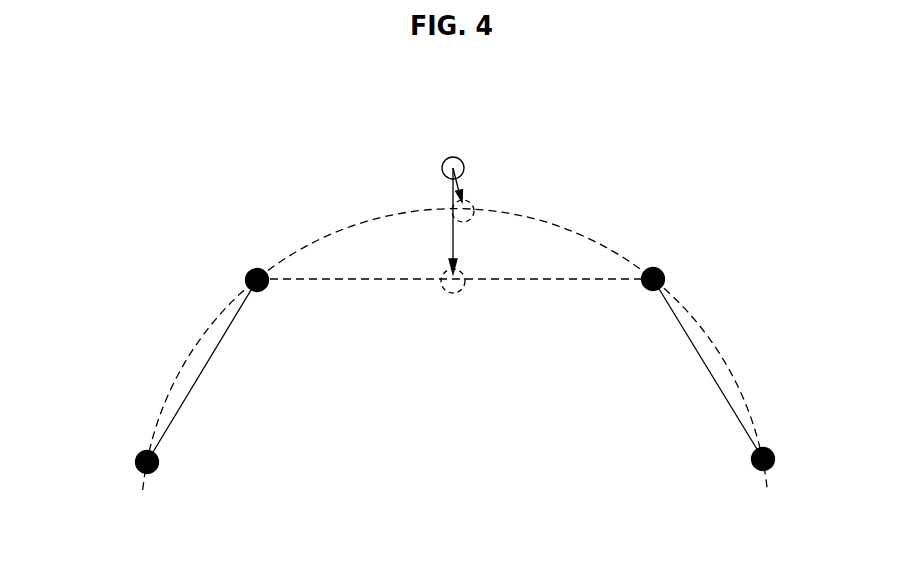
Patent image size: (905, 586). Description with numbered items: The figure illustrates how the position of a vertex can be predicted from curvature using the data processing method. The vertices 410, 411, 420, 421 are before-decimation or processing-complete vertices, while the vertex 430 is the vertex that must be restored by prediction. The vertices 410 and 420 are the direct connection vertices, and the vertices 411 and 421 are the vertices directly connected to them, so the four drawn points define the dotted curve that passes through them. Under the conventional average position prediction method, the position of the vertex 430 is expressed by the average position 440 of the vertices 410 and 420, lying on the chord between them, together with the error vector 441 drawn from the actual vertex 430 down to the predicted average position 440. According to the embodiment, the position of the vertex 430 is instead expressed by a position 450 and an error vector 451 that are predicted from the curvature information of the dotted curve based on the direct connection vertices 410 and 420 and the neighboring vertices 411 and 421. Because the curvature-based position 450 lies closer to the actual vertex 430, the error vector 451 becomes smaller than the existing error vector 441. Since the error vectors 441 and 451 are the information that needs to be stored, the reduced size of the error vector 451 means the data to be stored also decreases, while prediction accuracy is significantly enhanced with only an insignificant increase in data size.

The vertex 410 is at (246, 276).
The vertex 411 is at (136, 457).
The vertex 420 is at (664, 270).
The vertex 421 is at (773, 452).
The vertex 430 is at (452, 157).
The average position 440 is at (453, 293).
The error vector 441 is at (451, 234).
The position 450 is at (472, 221).
The error vector 451 is at (464, 190).